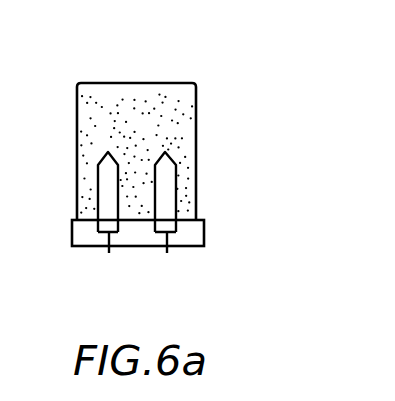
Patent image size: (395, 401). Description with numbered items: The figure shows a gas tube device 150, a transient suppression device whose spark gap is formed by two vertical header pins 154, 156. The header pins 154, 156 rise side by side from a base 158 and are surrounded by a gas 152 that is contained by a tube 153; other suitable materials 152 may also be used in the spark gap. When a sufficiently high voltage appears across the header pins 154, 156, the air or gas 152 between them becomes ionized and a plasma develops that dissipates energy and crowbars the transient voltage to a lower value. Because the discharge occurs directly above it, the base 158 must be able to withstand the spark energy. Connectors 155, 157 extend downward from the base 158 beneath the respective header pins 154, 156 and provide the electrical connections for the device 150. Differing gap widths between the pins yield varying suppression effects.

The gas tube device 150 is at (138, 63).
The gas 152 is at (182, 93).
The tube 153 is at (196, 118).
The header pin 154 is at (170, 178).
The connector 155 is at (170, 243).
The header pin 156 is at (110, 171).
The connector 157 is at (108, 241).
The base 158 is at (205, 222).